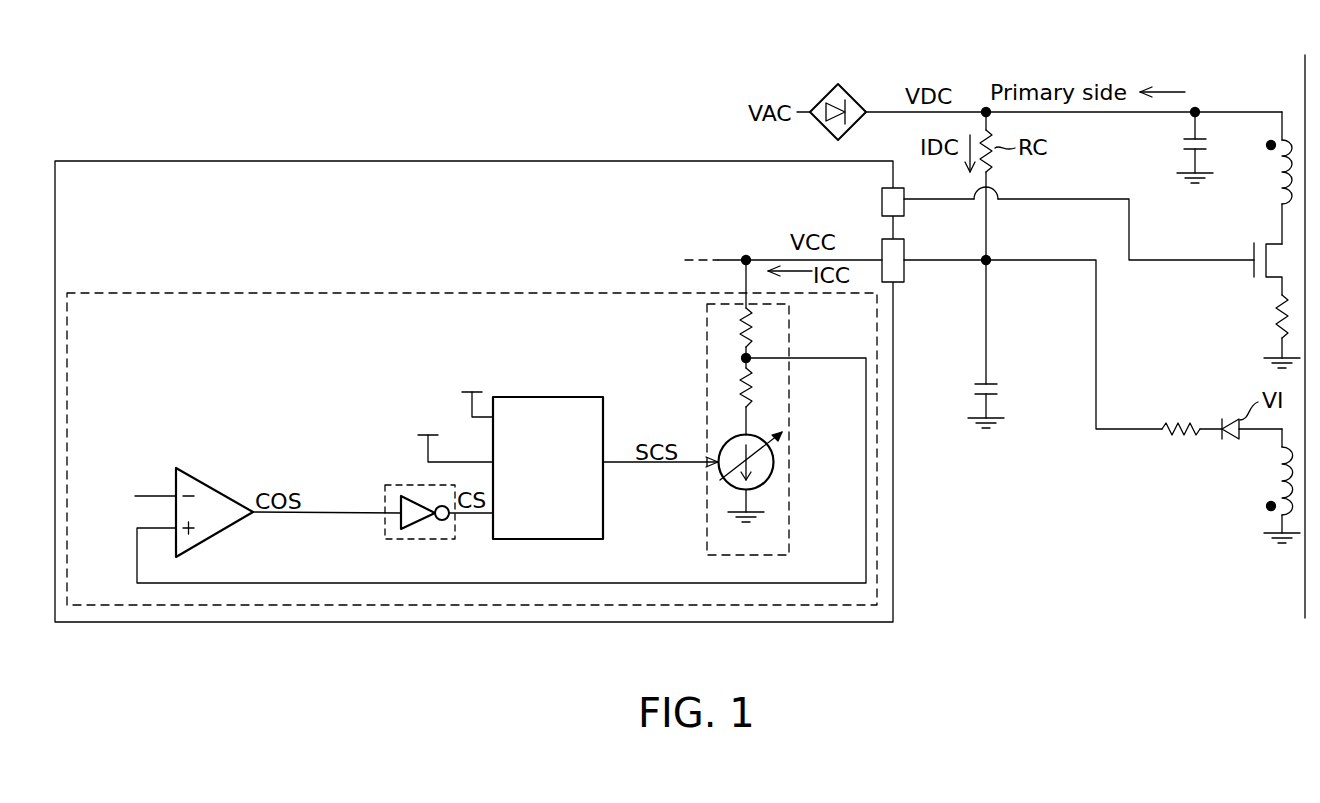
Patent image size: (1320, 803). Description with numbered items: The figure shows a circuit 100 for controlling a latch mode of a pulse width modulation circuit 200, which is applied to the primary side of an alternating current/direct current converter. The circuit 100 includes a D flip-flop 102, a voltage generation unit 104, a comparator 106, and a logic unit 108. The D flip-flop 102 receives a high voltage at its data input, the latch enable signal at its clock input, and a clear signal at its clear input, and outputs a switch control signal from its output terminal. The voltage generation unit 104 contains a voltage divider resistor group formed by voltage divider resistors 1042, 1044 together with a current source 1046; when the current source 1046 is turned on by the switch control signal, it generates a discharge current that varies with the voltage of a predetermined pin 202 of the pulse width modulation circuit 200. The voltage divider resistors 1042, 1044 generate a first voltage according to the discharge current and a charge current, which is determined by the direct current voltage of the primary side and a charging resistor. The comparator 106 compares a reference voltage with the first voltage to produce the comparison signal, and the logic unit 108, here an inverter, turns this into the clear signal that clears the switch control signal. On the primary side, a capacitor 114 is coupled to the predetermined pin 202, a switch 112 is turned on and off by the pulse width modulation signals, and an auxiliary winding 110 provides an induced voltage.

The circuit 100 is at (467, 605).
The D flip-flop 102 is at (548, 397).
The voltage generation unit 104 is at (747, 407).
The comparator 106 is at (232, 478).
The logic unit 108 is at (420, 540).
The auxiliary winding 110 is at (1275, 492).
The switch 112 is at (1274, 272).
The capacitor 114 is at (997, 390).
The pulse width modulation circuit 200 is at (503, 161).
The predetermined pin 202 is at (906, 275).
The voltage divider resistor 1042 is at (740, 386).
The voltage divider resistor 1044 is at (740, 326).
The current source 1046 is at (773, 448).